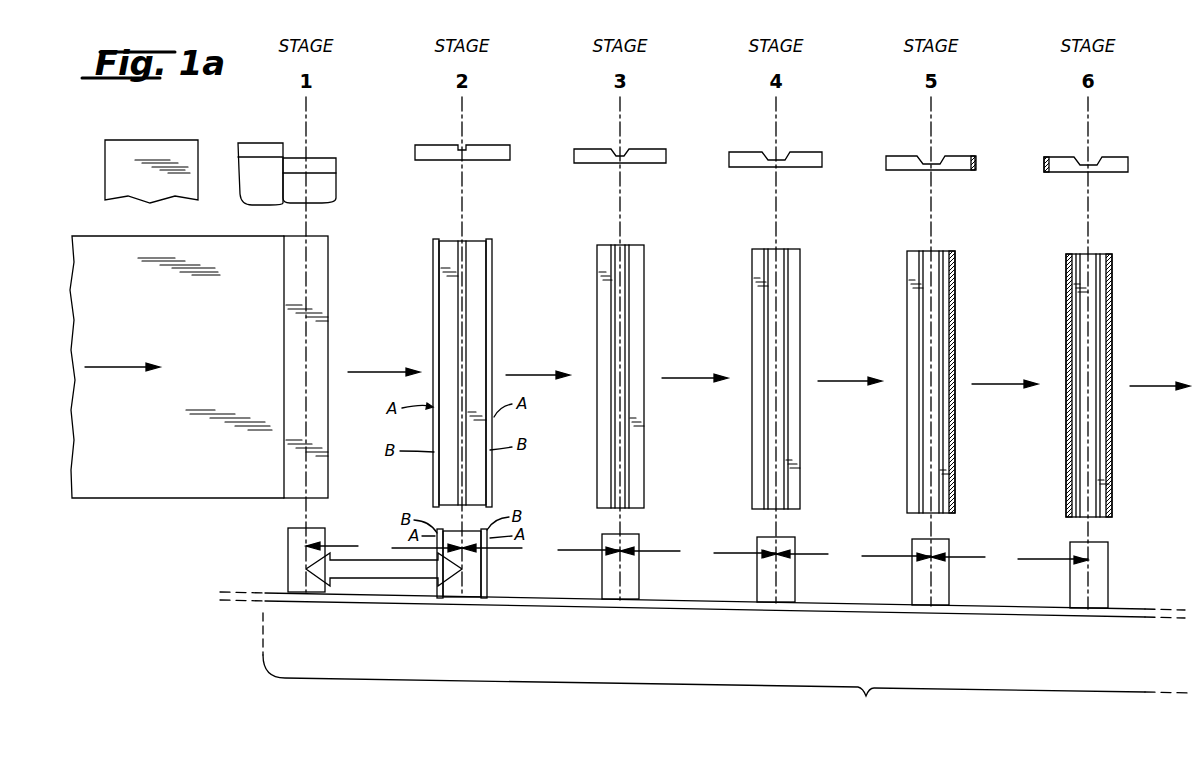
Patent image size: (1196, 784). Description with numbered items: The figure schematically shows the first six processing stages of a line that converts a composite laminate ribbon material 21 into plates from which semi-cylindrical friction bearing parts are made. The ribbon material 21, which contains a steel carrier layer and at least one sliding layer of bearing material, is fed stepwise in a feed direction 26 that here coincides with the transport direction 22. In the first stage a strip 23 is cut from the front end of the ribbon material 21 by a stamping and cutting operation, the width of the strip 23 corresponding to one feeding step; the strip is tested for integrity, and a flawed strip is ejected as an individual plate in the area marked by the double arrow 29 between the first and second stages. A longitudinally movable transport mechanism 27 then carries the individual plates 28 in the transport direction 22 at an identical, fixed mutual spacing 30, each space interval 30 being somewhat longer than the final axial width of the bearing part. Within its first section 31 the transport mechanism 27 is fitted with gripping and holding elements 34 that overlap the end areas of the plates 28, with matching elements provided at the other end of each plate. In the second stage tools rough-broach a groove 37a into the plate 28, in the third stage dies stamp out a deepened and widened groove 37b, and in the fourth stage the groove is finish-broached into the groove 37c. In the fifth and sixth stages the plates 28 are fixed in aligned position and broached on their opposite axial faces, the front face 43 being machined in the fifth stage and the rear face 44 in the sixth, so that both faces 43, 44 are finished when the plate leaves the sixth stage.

The composite laminate ribbon material 21 is at (256, 150).
The transport direction 22 is at (769, 368).
The strip 23 is at (322, 158).
The feed direction 26 is at (122, 356).
The transport mechanism 27 is at (690, 611).
The plate 28 is at (483, 158).
The double arrow 29 is at (386, 580).
The space interval 30 is at (697, 552).
The first section of transport mechanism 31 is at (726, 670).
The gripping and holding element 34 is at (288, 556).
The rough-broached groove 37a is at (464, 148).
The deepened and widened groove 37b is at (621, 151).
The finish-broached groove 37c is at (778, 157).
The front axial face 43 is at (977, 165).
The rear axial face 44 is at (1046, 158).